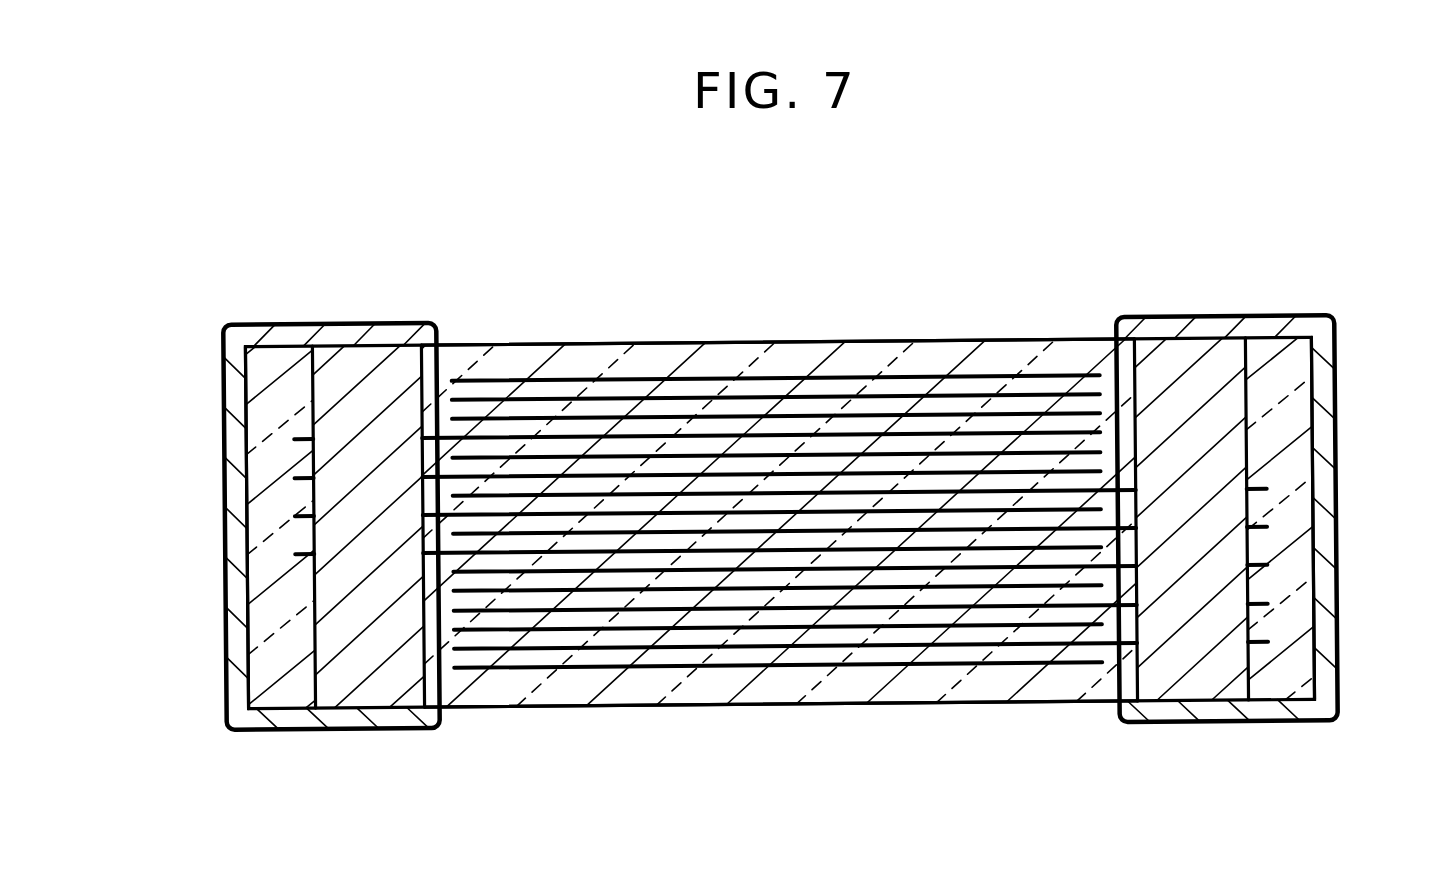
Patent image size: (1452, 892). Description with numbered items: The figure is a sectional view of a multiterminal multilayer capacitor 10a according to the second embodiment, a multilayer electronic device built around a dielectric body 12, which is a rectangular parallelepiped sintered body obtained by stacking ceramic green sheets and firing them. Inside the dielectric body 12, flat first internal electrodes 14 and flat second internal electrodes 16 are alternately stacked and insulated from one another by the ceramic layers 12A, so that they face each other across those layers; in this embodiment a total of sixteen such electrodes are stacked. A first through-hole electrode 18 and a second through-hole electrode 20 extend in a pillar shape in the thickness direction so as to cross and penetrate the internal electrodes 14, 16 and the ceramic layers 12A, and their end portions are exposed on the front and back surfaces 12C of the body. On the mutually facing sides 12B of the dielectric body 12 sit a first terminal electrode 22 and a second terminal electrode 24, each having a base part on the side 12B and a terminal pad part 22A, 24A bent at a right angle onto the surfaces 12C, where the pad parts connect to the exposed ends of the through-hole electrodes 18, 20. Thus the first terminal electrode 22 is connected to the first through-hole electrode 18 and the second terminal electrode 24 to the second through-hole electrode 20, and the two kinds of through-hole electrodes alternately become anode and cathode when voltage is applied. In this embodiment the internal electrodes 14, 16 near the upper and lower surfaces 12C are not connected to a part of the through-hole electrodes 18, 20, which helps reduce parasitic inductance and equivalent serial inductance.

The multiterminal multilayer capacitor 10a is at (1030, 327).
The dielectric body 12 is at (847, 357).
The ceramic layers 12A is at (793, 417).
The sides 12B is at (1317, 415).
The front and back surfaces 12C is at (667, 341).
The first internal electrodes 14 is at (990, 472).
The second internal electrodes 16 is at (637, 460).
The first through-hole electrode 18 is at (1222, 371).
The second through-hole electrode 20 is at (397, 378).
The first terminal electrode 22 is at (1336, 494).
The terminal pad part 22A is at (1190, 336).
The second terminal electrode 24 is at (240, 492).
The terminal pad part 24A is at (378, 333).